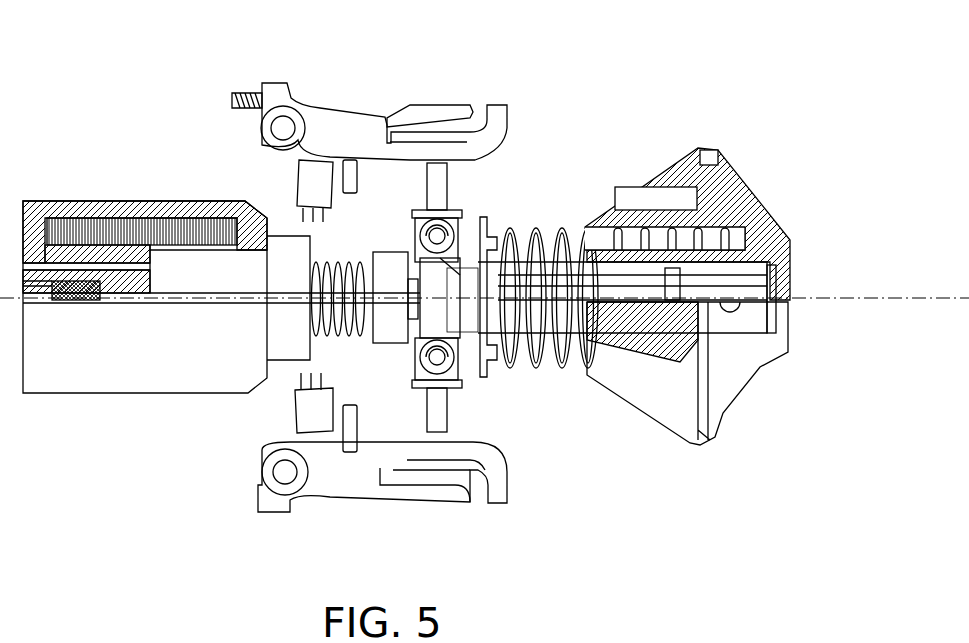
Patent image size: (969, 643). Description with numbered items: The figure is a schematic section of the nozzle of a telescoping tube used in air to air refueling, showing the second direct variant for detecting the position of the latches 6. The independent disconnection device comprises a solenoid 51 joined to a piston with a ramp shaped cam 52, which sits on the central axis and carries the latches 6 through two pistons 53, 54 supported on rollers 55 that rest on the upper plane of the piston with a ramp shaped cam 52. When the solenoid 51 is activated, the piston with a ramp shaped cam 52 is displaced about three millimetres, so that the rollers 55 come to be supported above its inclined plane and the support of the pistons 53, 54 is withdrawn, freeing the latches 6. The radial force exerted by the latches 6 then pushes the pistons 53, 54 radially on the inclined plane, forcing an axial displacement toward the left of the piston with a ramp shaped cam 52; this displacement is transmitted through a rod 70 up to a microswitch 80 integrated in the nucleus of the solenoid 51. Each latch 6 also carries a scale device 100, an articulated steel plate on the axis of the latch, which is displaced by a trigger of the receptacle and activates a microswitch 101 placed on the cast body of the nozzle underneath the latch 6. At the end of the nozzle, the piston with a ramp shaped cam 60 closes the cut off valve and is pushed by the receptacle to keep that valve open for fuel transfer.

The latches 6 is at (417, 150).
The scale device 100 is at (447, 115).
The microswitch 101 is at (305, 177).
The solenoid 51 is at (202, 230).
The piston 53 is at (440, 183).
The piston with a ramp shaped cam 60 is at (745, 227).
The microswitch 80 is at (68, 297).
The rod 70 is at (180, 297).
The piston with a ramp shaped cam 52 is at (435, 282).
The rollers 55 is at (430, 375).
The piston 54 is at (437, 418).